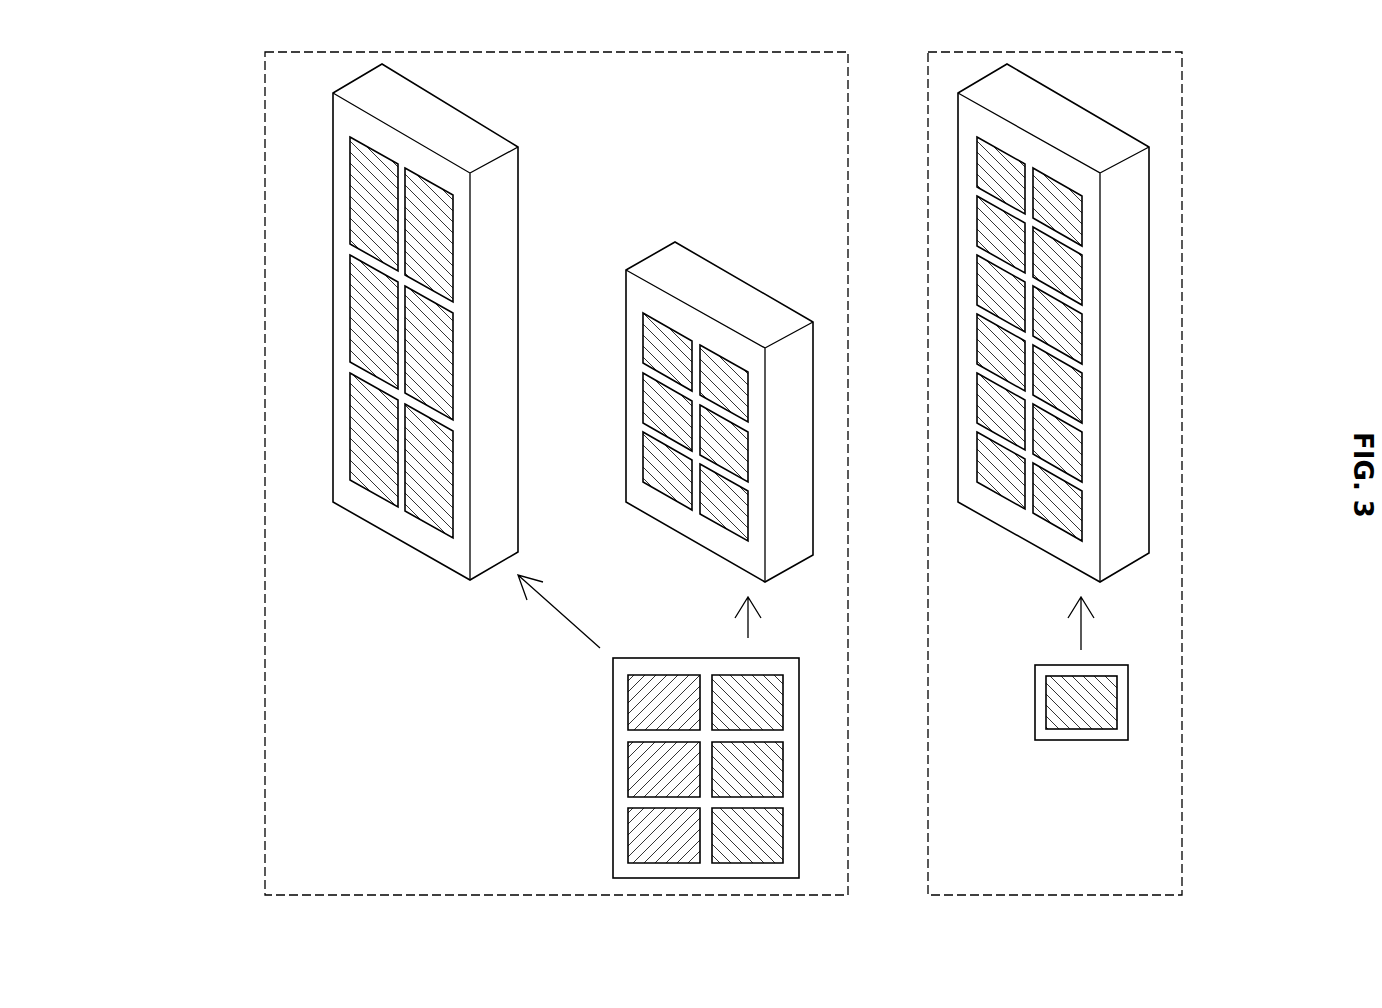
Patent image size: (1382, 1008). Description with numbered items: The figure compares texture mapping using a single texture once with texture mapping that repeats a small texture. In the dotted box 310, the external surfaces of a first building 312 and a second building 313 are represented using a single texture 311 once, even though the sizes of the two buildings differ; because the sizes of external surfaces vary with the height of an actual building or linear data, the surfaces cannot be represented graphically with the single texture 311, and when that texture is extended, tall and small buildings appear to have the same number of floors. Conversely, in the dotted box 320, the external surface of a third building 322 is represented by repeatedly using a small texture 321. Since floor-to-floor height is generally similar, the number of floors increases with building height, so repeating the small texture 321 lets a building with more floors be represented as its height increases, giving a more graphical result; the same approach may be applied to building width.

The dotted box 310 is at (265, 173).
The single texture 311 is at (613, 768).
The first building 312 is at (627, 385).
The second building 313 is at (432, 560).
The dotted box 320 is at (1182, 141).
The small texture 321 is at (1080, 741).
The third building 322 is at (1149, 370).